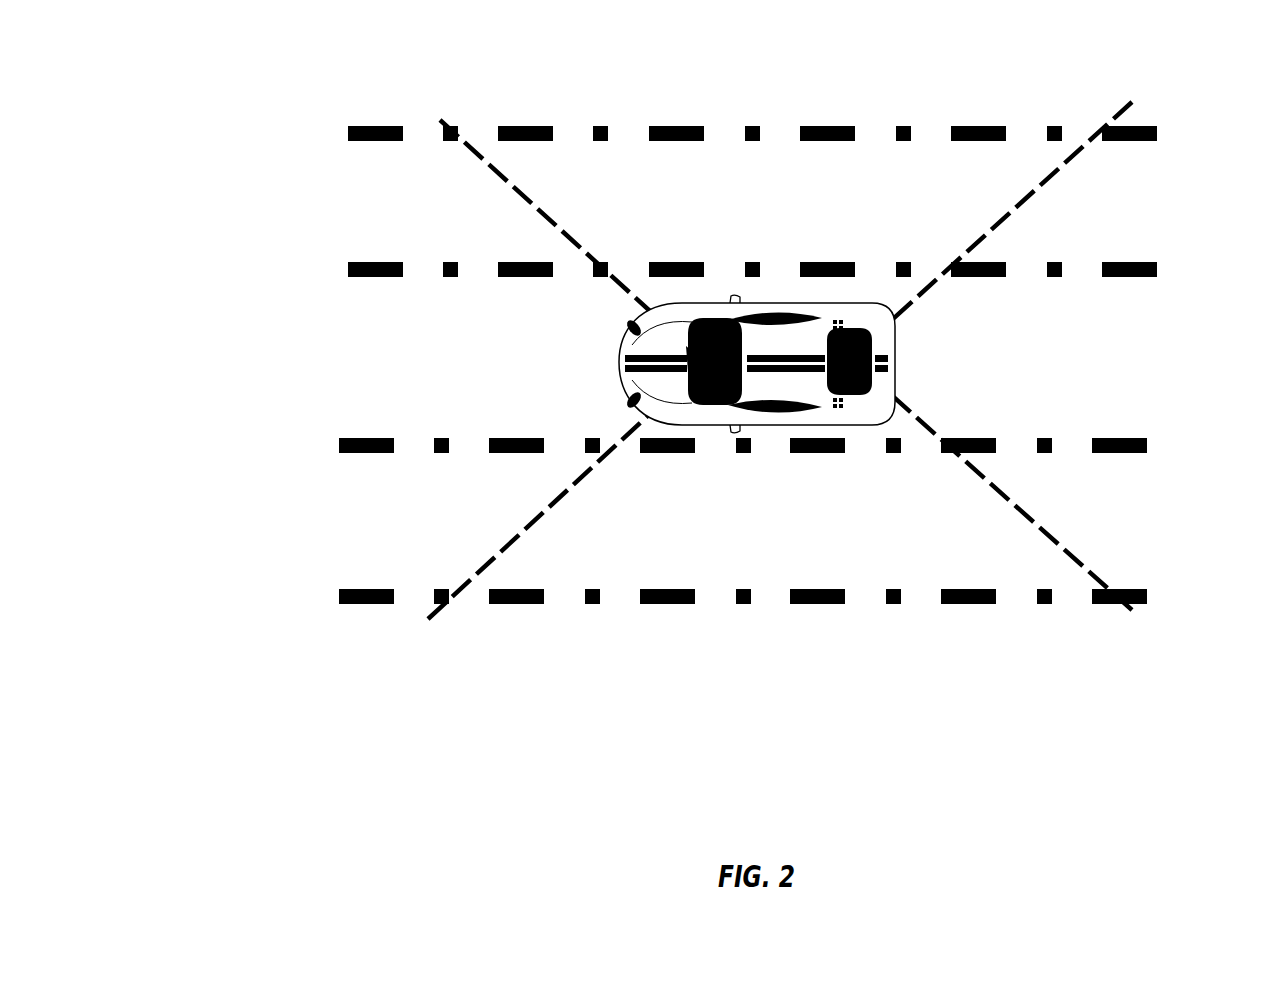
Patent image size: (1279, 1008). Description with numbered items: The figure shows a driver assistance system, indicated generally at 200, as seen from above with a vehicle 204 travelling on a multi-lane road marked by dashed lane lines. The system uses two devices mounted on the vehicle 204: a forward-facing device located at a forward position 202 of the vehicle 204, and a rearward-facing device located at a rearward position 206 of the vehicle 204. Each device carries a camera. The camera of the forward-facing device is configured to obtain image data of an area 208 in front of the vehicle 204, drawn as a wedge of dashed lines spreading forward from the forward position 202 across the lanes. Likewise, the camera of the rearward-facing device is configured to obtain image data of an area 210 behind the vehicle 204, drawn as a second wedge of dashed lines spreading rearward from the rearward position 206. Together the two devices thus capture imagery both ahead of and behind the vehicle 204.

The driving environment 200 is at (276, 136).
The forward position 202 is at (705, 350).
The vehicle 204 is at (748, 340).
The rearward position 206 is at (861, 357).
The area in front of the vehicle 208 is at (467, 145).
The area behind the vehicle 210 is at (988, 234).